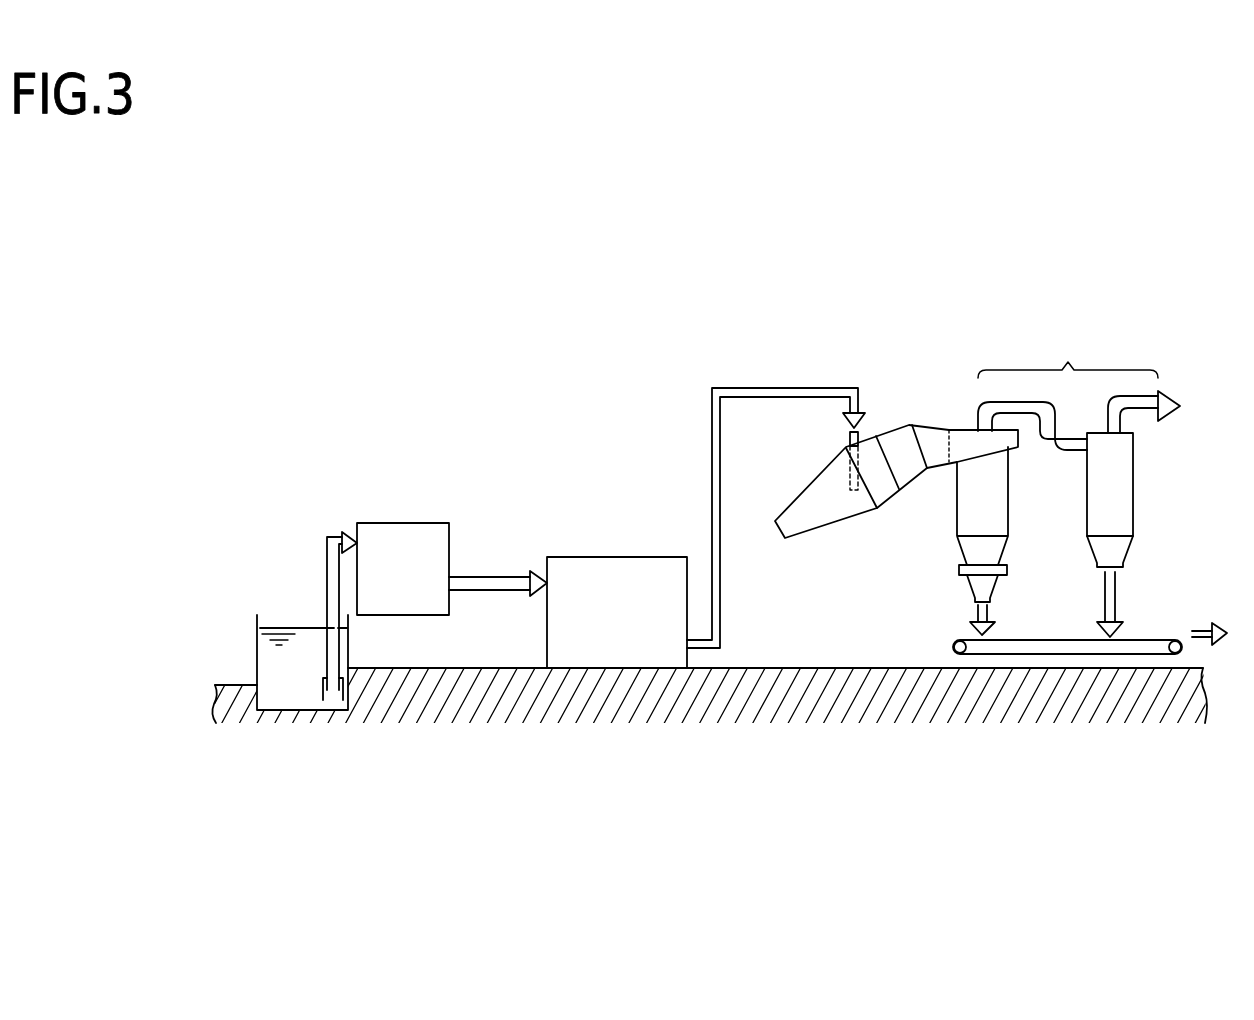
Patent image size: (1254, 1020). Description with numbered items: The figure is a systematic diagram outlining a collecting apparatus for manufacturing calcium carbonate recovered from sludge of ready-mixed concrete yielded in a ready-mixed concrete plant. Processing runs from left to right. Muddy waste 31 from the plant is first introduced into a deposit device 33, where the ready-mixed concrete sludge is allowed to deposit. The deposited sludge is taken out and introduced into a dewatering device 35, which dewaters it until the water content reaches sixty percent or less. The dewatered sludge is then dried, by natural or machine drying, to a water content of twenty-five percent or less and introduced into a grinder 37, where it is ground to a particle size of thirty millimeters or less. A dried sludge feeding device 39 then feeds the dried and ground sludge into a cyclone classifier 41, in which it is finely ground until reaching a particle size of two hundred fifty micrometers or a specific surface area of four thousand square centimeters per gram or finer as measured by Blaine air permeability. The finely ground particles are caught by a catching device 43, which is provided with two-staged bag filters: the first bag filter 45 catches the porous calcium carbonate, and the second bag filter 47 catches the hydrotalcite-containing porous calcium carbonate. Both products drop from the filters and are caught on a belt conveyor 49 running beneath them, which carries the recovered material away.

The muddy waste 31 is at (298, 622).
The deposit device 33 is at (257, 643).
The dewatering device 35 is at (400, 522).
The grinder 37 is at (620, 556).
The dried sludge feeding device 39 is at (848, 442).
The cyclone classifier 41 is at (927, 425).
The catching device 43 is at (1079, 390).
The first bag filter 45 is at (957, 507).
The second bag filter 47 is at (1133, 468).
The belt conveyor 49 is at (1141, 640).